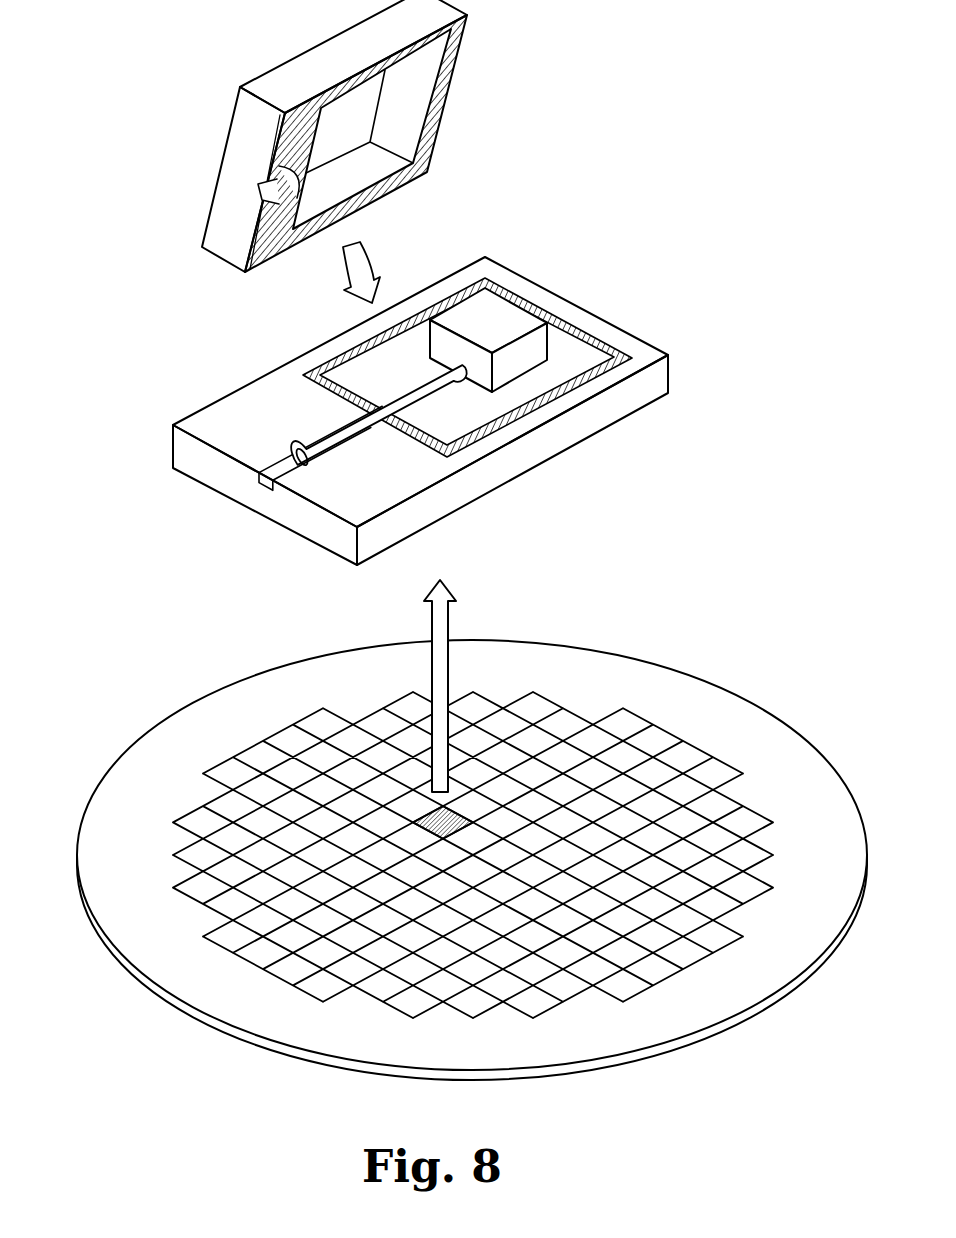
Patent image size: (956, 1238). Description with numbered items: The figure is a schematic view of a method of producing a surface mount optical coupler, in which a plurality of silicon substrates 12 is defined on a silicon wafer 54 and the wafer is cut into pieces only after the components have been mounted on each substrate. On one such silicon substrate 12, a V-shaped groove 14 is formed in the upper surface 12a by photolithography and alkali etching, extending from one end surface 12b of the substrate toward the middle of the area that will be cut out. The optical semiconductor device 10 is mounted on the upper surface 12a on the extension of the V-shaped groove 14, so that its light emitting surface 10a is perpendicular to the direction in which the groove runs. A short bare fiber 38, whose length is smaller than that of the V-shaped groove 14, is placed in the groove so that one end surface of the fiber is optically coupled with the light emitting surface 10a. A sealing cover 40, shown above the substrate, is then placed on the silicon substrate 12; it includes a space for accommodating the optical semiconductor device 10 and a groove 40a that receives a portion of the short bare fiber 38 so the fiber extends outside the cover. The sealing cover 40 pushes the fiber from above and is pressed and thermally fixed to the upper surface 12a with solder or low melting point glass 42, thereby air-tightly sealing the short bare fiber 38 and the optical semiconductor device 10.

The optical semiconductor device 10 is at (504, 363).
The light emitting surface 10a is at (470, 372).
The silicon substrate 12 is at (420, 436).
The upper surface 12a is at (633, 362).
The end surface 12b is at (318, 531).
The V-shaped groove 14 is at (283, 468).
The short bare fiber 38 is at (335, 436).
The sealing cover 40 is at (309, 136).
The groove 40a is at (257, 231).
The solder or low melting point glass 42 is at (448, 96).
The silicon wafer 54 is at (128, 792).